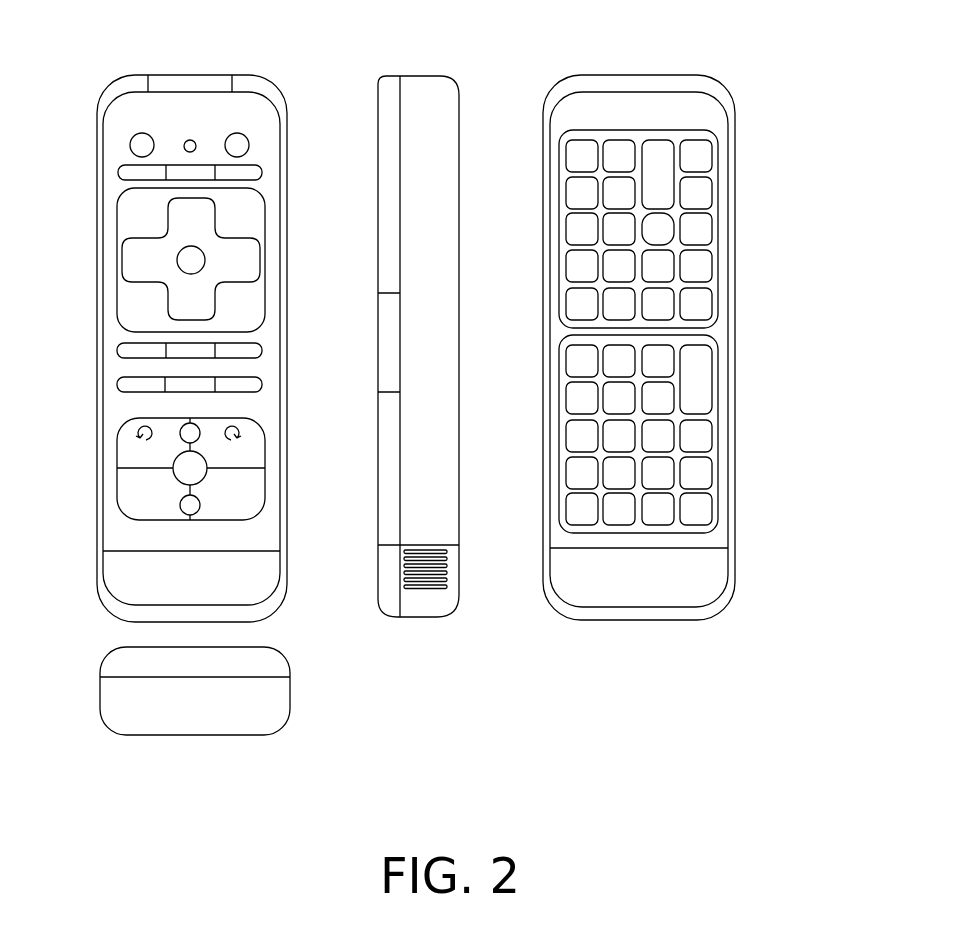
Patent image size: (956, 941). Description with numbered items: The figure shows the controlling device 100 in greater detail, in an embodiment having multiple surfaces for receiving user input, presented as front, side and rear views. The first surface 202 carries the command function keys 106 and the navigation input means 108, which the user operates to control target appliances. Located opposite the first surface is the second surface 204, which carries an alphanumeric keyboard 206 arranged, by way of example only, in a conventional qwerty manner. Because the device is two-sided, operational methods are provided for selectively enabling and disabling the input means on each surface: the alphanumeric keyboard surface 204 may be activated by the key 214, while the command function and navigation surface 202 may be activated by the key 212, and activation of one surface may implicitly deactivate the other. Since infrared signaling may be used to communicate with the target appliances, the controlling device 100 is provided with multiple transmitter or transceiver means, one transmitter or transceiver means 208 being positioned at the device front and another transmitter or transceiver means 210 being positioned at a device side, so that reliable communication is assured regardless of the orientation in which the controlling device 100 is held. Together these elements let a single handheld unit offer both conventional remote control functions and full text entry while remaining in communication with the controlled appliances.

The controlling device 100 is at (396, 395).
The command function keys 106 is at (85, 532).
The navigation input means 108 is at (148, 258).
The first surface 202 is at (206, 339).
The second surface 204 is at (650, 361).
The alphanumeric keyboard 206 is at (699, 303).
The transmitter or transceiver means 208 is at (377, 355).
The transmitter or transceiver means 210 is at (178, 75).
The key 212 is at (122, 166).
The key 214 is at (740, 123).